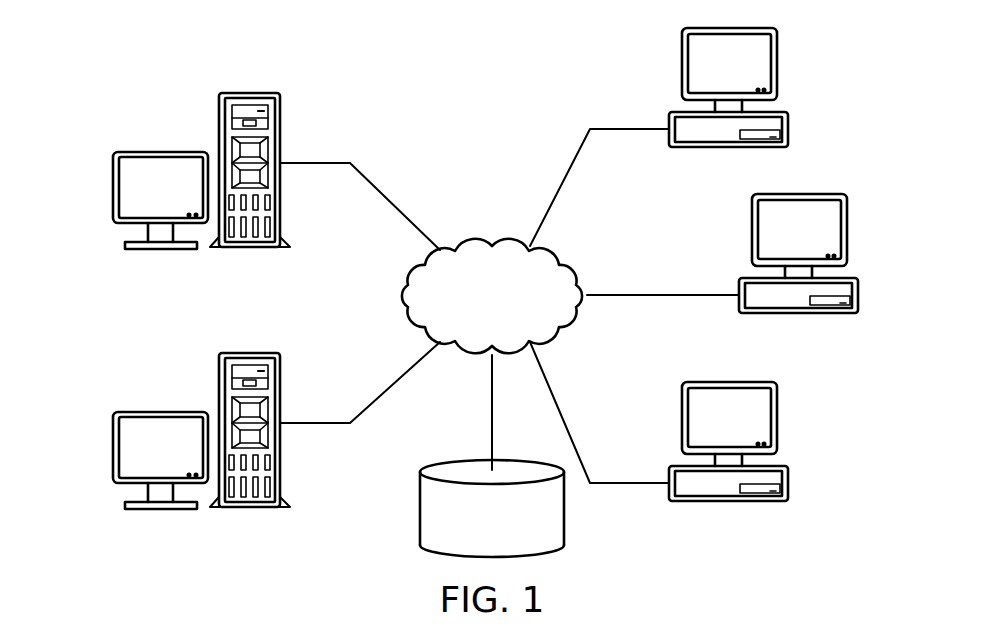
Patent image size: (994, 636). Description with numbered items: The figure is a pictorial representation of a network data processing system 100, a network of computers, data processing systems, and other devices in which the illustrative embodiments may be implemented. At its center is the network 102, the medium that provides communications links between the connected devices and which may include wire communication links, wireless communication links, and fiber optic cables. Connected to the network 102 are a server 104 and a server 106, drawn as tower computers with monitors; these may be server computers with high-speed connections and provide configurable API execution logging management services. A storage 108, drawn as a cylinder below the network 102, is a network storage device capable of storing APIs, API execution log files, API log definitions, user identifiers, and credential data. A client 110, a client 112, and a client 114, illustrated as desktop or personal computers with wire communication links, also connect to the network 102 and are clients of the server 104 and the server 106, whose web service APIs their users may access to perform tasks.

The network data processing system 100 is at (354, 70).
The network 102 is at (463, 246).
The server 104 is at (113, 448).
The server 106 is at (113, 190).
The storage 108 is at (420, 508).
The client 110 is at (790, 118).
The client 112 is at (862, 306).
The client 114 is at (790, 490).